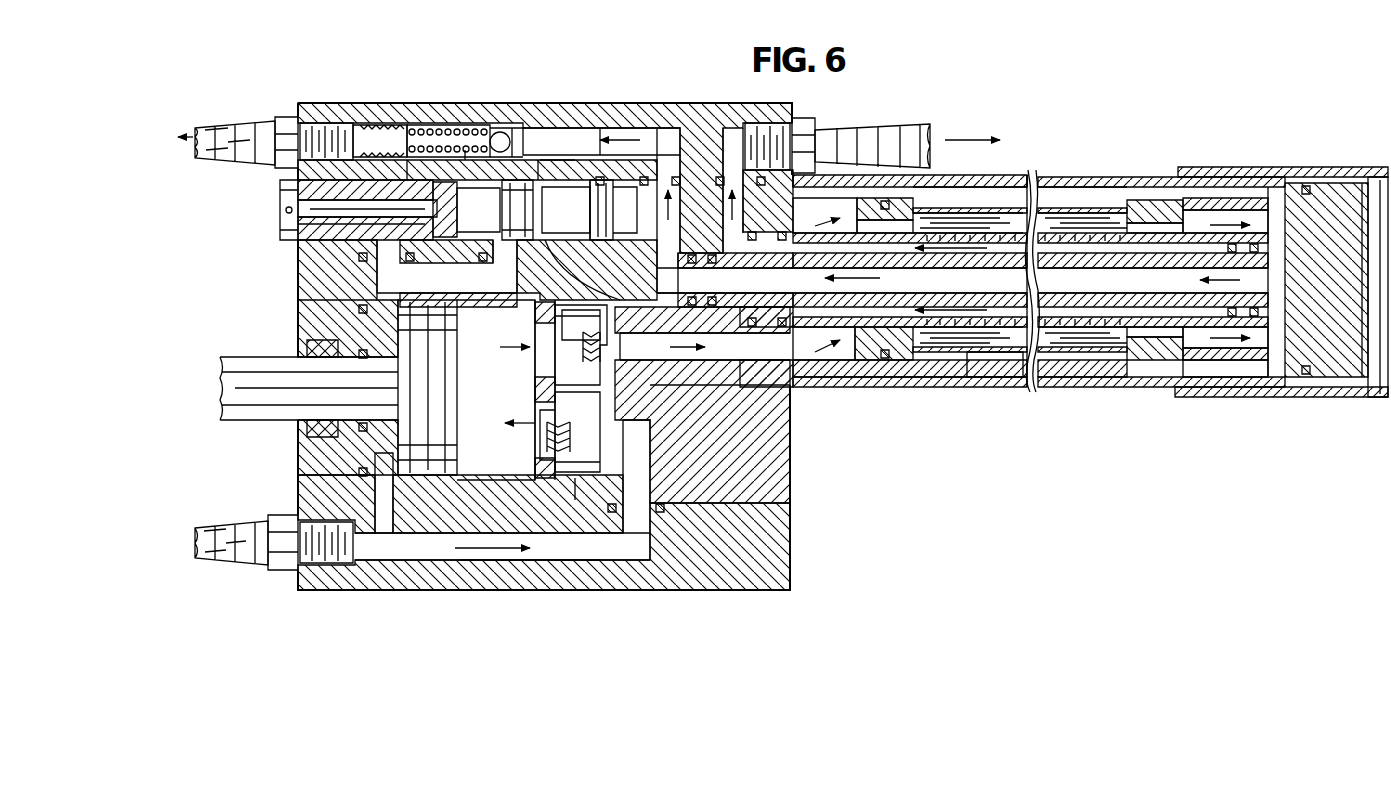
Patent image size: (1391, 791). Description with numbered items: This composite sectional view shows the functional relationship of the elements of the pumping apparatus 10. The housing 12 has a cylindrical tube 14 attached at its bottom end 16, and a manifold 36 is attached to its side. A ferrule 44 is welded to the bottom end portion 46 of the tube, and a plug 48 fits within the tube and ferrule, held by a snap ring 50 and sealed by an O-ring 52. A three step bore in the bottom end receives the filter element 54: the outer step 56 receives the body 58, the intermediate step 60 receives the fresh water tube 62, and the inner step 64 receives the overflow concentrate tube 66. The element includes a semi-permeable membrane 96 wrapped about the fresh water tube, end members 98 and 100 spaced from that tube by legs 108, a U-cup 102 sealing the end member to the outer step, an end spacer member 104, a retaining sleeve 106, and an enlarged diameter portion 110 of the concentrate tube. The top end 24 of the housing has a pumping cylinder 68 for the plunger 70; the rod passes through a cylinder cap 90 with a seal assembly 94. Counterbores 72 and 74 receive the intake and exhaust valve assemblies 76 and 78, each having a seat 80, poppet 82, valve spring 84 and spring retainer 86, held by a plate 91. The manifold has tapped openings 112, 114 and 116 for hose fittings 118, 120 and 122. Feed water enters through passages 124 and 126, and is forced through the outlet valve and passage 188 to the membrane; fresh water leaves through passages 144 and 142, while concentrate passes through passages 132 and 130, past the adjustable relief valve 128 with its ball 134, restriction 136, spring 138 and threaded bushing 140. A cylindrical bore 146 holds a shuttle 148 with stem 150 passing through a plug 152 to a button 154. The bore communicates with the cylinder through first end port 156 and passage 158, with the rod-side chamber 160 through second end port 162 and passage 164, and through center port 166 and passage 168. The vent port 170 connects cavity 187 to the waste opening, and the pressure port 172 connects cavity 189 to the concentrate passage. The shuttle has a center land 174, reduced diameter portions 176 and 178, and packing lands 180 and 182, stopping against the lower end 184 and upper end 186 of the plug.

The pumping apparatus 10 is at (950, 488).
The housing 12 is at (795, 460).
The cylindrical tube 14 is at (1065, 178).
The bottom end 16 is at (790, 410).
The top end 24 is at (296, 266).
The manifold 36 is at (596, 103).
The ferrule 44 is at (1240, 167).
The bottom end portion 46 is at (1315, 183).
The plug 48 is at (1375, 183).
The snap ring 50 is at (1365, 382).
The O-ring 52 is at (1305, 378).
The filter element 54 is at (1068, 370).
The outer step 56 is at (830, 372).
The body 58 is at (905, 365).
The intermediate step 60 is at (962, 282).
The fresh water tube 62 is at (805, 233).
The inner step 64 is at (697, 274).
The overflow concentrate tube 66 is at (1092, 352).
The pumping cylinder 68 is at (502, 547).
The plunger 70 is at (410, 385).
The counterbore 72 is at (570, 480).
The counterbore 74 is at (612, 300).
The intake valve assembly 76 is at (540, 465).
The exhaust valve assembly 78 is at (535, 372).
The seat 80 is at (560, 318).
The poppet 82 is at (560, 338).
The valve spring 84 is at (555, 430).
The spring retainer 86 is at (570, 405).
The cylinder cap 90 is at (296, 312).
The plate 91 is at (506, 390).
The seal assembly 94 is at (335, 412).
The semi-permeable membrane 96 is at (1042, 225).
The end member 98 is at (905, 200).
The end member 100 is at (1160, 200).
The U-cup 102 is at (888, 362).
The end spacer member 104 is at (1248, 198).
The retaining sleeve 106 is at (1105, 362).
The legs 108 is at (888, 225).
The enlarged diameter portion 110 is at (1222, 330).
The tapped opening 112 is at (336, 560).
The tapped opening 114 is at (334, 123).
The tapped opening 116 is at (770, 130).
The hose fitting 118 is at (247, 570).
The hose fitting 120 is at (240, 124).
The hose fitting 122 is at (875, 125).
The passage 124 is at (530, 565).
The passage 126 is at (650, 478).
The adjustable relief valve 128 is at (492, 133).
The passage 130 is at (650, 128).
The passage 132 is at (704, 65).
The ball 134 is at (513, 125).
The restriction 136 is at (512, 135).
The spring 138 is at (445, 125).
The threaded bushing 140 is at (388, 125).
The passage 142 is at (733, 128).
The passage 144 is at (740, 228).
The cylindrical bore 146 is at (412, 190).
The shuttle 148 is at (601, 141).
The stem 150 is at (300, 208).
The plug 152 is at (296, 230).
The button 154 is at (290, 185).
The first end port 156 is at (723, 282).
The passage 158 is at (705, 348).
The chamber 160 is at (398, 312).
The second end port 162 is at (388, 245).
The passage 164 is at (378, 296).
The center port 166 is at (503, 250).
The passage 168 is at (470, 290).
The vent port 170 is at (470, 128).
The pressure port 172 is at (556, 160).
The center land 174 is at (578, 165).
The reduced diameter portion 176 is at (594, 210).
The reduced diameter portion 178 is at (498, 210).
The packing land 180 is at (598, 180).
The packing land 182 is at (455, 206).
The lower end 184 is at (420, 192).
The upper end 186 is at (237, 208).
The cavity 187 is at (516, 173).
The passage 188 is at (740, 370).
The cavity 189 is at (550, 260).